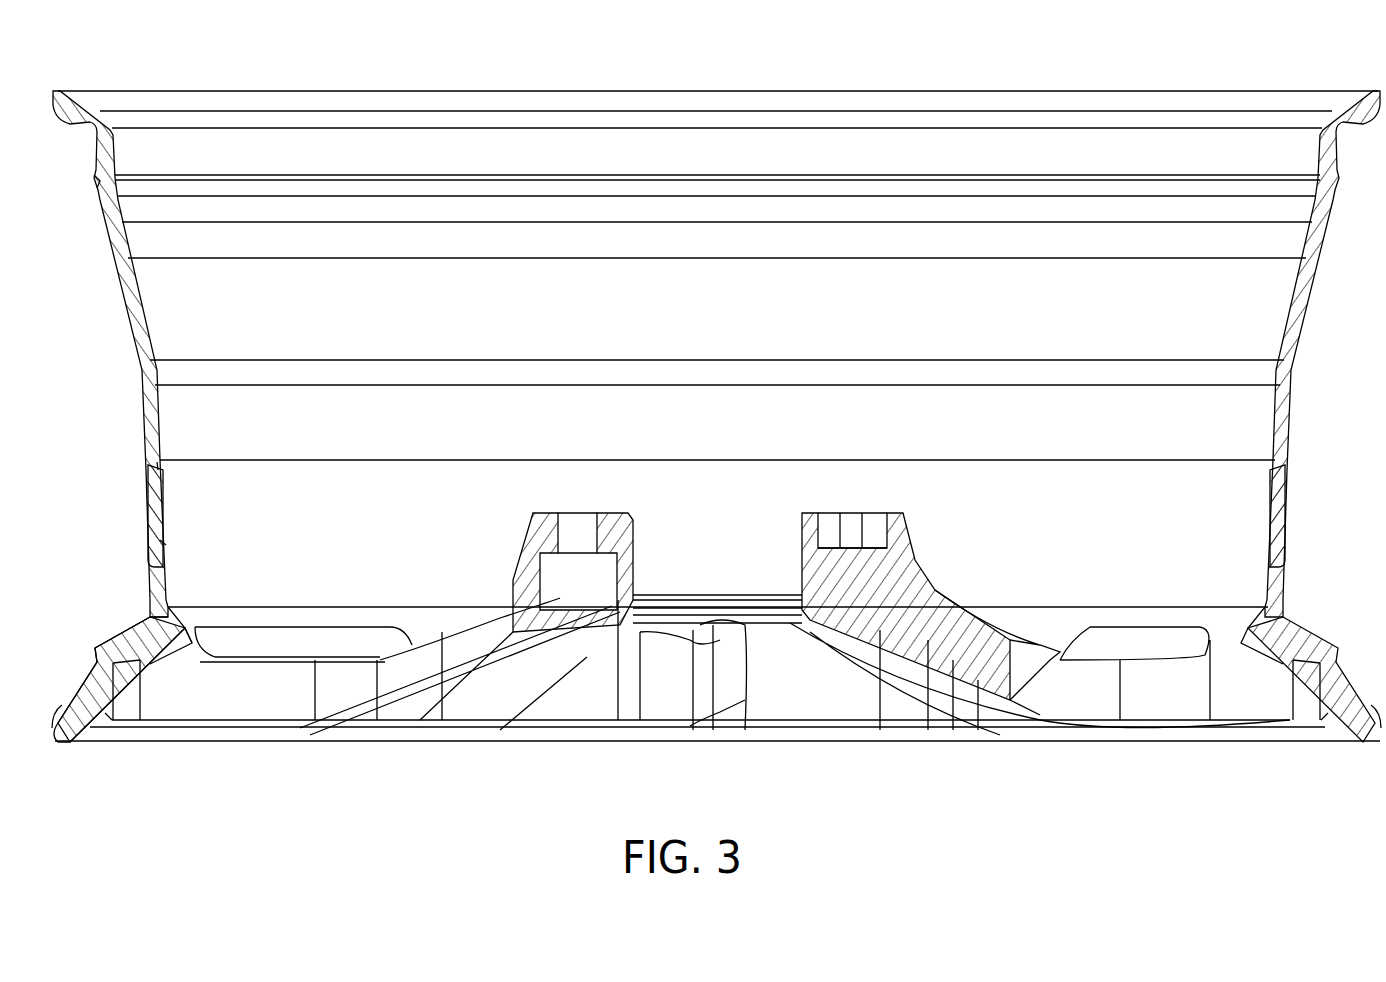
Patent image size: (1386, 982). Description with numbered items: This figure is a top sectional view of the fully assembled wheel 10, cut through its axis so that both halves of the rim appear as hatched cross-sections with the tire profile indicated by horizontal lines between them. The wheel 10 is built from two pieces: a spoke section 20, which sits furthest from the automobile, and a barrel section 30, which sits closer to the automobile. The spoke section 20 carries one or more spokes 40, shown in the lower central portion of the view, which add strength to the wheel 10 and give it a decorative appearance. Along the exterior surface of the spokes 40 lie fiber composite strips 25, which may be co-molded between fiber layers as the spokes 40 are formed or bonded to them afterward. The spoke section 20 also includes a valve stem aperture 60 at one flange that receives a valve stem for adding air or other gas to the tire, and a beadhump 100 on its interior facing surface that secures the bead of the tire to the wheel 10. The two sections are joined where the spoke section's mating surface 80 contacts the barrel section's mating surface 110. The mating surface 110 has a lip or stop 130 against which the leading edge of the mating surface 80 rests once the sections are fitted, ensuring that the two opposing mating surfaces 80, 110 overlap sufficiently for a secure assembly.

The wheel 10 is at (704, 58).
The spoke section 20 is at (140, 604).
The fiber composite strips 25 is at (966, 722).
The barrel section 30 is at (138, 408).
The spokes 40 is at (488, 740).
The valve stem aperture 60 is at (1298, 645).
The mating surface 80 is at (148, 526).
The beadhump 100 is at (95, 178).
The mating surface 110 is at (165, 543).
The lip or stop 130 is at (157, 462).